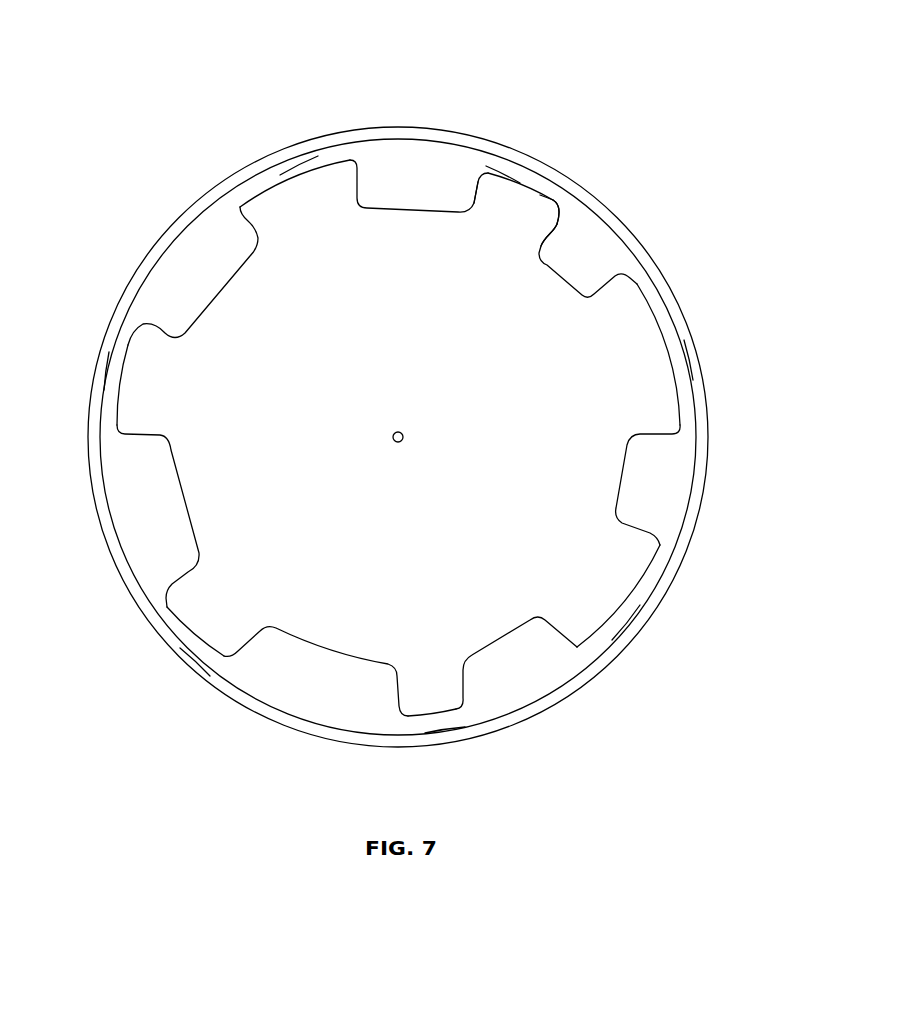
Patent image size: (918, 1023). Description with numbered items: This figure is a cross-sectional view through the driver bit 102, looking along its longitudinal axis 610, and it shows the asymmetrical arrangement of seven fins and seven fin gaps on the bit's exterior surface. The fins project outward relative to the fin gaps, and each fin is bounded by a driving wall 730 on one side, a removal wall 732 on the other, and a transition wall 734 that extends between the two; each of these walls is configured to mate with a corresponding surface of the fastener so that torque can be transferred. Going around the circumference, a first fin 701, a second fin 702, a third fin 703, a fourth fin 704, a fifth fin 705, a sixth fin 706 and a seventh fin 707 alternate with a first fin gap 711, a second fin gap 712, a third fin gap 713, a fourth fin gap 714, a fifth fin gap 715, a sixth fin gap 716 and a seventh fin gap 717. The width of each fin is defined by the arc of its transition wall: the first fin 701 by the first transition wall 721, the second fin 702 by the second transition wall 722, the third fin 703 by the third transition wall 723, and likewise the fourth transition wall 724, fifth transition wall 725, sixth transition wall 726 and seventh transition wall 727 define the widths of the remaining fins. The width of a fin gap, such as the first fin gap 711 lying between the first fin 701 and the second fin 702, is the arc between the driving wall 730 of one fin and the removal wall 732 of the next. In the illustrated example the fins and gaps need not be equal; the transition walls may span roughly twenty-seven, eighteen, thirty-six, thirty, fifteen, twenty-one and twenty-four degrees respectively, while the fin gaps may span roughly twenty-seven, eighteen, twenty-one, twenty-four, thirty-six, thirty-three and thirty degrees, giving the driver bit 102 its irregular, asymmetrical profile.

The driver bit 102 is at (160, 127).
The longitudinal axis 610 is at (393, 434).
The first fin 701 is at (266, 196).
The second fin 702 is at (130, 407).
The third fin 703 is at (188, 605).
The fourth fin 704 is at (427, 708).
The fifth fin 705 is at (623, 577).
The sixth fin 706 is at (654, 340).
The seventh fin 707 is at (530, 202).
The first fin gap 711 is at (220, 293).
The second fin gap 712 is at (180, 498).
The third fin gap 713 is at (327, 652).
The fourth fin gap 714 is at (497, 643).
The fifth fin gap 715 is at (624, 478).
The sixth fin gap 716 is at (560, 272).
The seventh fin gap 717 is at (417, 207).
The first transition wall 721 is at (308, 166).
The second transition wall 722 is at (112, 367).
The third transition wall 723 is at (196, 634).
The fourth transition wall 724 is at (446, 723).
The fifth transition wall 725 is at (624, 627).
The sixth transition wall 726 is at (680, 366).
The seventh transition wall 727 is at (507, 172).
The driving wall 730 is at (479, 174).
The removal wall 732 is at (557, 227).
The transition wall 734 is at (553, 192).